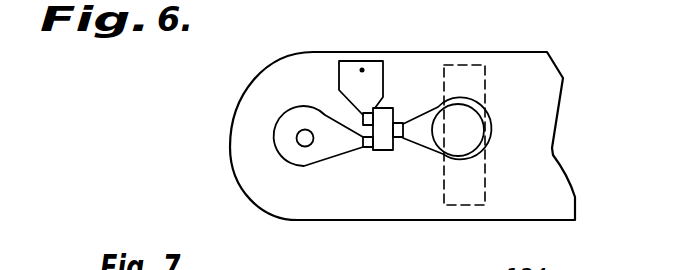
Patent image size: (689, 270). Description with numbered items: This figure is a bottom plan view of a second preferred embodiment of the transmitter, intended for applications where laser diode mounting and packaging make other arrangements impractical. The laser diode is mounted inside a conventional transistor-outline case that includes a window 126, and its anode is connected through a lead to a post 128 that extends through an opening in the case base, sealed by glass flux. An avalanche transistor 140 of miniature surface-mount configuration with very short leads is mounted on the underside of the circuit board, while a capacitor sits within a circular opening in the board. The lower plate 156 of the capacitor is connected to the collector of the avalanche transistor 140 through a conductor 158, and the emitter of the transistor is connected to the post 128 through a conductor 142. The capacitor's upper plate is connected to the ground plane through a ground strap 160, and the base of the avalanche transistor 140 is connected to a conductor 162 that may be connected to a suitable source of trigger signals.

The window 126 is at (402, 161).
The post 128 is at (297, 137).
The avalanche transistor 140 is at (382, 144).
The conductor 142 is at (297, 120).
The lower plate 156 is at (490, 117).
The conductor 158 is at (423, 115).
The ground strap 160 is at (478, 192).
The conductor 162 is at (373, 68).